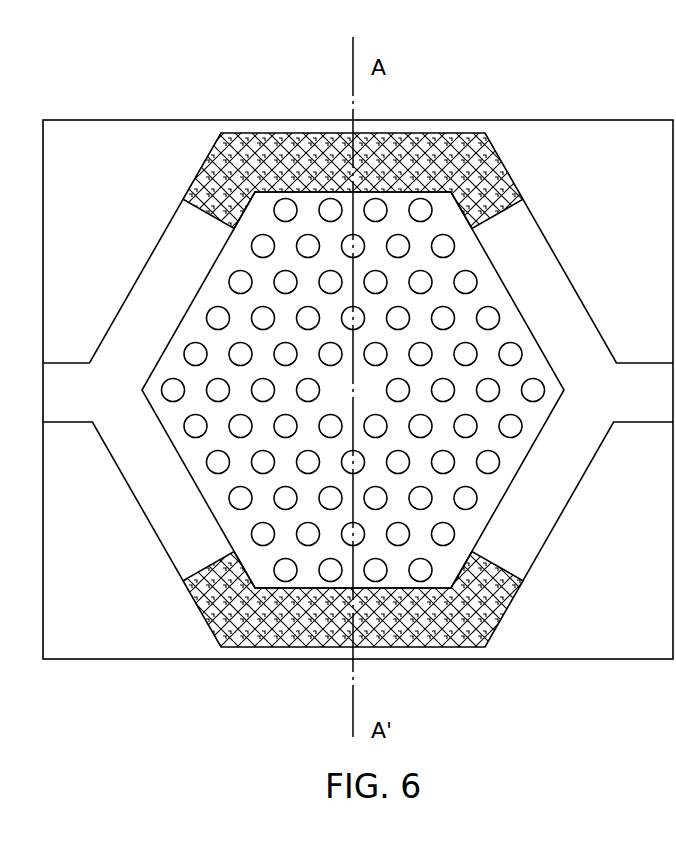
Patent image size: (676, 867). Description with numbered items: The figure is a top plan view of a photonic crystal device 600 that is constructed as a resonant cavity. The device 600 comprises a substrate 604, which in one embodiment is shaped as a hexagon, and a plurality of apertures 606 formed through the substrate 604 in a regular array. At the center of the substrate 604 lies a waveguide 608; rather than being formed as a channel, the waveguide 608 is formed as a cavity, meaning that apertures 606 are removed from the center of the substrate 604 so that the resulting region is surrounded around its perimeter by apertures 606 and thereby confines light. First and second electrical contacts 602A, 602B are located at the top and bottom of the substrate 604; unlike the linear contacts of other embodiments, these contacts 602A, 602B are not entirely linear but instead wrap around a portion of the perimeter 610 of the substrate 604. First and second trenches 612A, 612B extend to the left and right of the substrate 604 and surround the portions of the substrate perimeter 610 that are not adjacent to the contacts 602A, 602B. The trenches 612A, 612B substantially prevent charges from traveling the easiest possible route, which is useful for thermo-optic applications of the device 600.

The photonic crystal device 600 is at (176, 68).
The first electrical contact 602A is at (305, 158).
The second electrical contact 602B is at (235, 638).
The substrate 604 is at (400, 325).
The apertures 606 is at (466, 280).
The waveguide 608 is at (367, 397).
The perimeter 610 is at (523, 342).
The first trench 612A is at (162, 295).
The second trench 612B is at (583, 357).